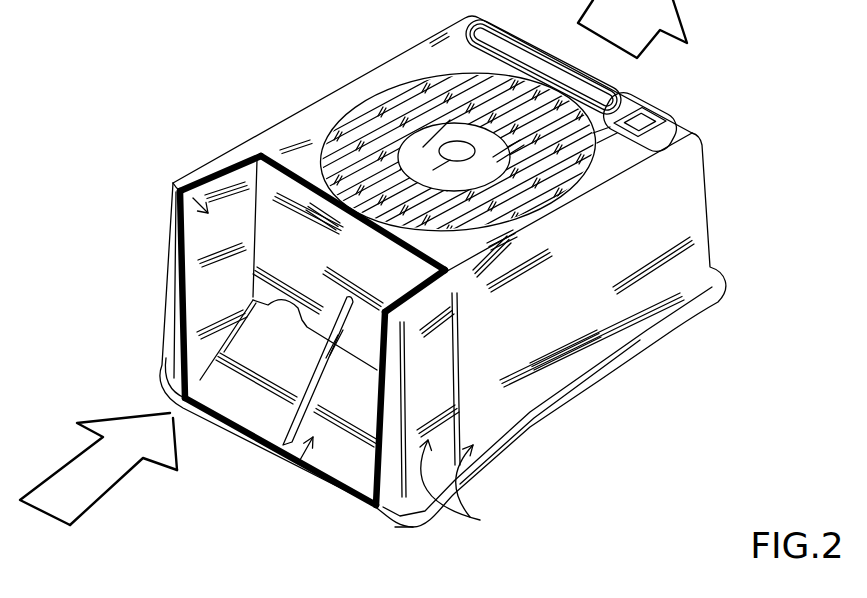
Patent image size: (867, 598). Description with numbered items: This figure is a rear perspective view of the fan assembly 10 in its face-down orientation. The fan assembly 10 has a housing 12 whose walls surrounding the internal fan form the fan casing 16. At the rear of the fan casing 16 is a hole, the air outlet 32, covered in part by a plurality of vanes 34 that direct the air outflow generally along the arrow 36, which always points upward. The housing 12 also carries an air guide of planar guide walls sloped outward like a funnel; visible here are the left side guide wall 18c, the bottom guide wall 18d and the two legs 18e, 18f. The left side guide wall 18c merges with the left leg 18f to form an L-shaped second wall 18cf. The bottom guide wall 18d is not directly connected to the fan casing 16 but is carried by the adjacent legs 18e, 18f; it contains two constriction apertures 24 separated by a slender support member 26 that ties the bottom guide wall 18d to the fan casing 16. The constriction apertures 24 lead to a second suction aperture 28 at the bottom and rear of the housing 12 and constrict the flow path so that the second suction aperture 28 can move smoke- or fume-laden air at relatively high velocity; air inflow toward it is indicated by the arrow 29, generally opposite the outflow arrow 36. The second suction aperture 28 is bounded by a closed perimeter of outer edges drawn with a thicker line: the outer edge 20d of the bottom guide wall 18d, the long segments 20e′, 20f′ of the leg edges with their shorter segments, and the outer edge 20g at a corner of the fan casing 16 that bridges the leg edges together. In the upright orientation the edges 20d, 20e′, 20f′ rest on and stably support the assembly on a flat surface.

The fan assembly 10 is at (717, 83).
The housing 12 is at (703, 173).
The fan casing 16 is at (703, 173).
The left side guide wall 18c is at (617, 340).
The second wall 18cf is at (482, 493).
The bottom guide wall 18d is at (300, 460).
The right leg 18e is at (172, 184).
The left leg 18f is at (377, 390).
The outer edge of bottom guide wall 20d is at (323, 472).
The long segment of outer edge of right leg 20e′ is at (178, 255).
The long segment of outer edge of left leg 20f′ is at (420, 380).
The outer edge at corner of fan casing 20g is at (288, 163).
The constriction apertures 24 is at (277, 363).
The slender support member 26 is at (287, 447).
The second suction aperture 28 is at (123, 318).
The air inflow arrow 29 is at (115, 410).
The air outlet 32 is at (456, 167).
The vanes 34 is at (420, 90).
The air outflow arrow 36 is at (677, 18).